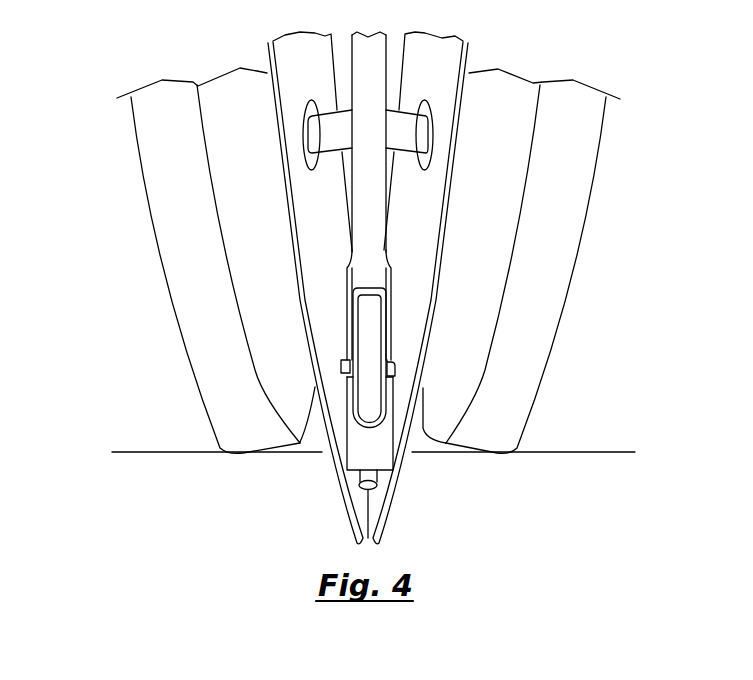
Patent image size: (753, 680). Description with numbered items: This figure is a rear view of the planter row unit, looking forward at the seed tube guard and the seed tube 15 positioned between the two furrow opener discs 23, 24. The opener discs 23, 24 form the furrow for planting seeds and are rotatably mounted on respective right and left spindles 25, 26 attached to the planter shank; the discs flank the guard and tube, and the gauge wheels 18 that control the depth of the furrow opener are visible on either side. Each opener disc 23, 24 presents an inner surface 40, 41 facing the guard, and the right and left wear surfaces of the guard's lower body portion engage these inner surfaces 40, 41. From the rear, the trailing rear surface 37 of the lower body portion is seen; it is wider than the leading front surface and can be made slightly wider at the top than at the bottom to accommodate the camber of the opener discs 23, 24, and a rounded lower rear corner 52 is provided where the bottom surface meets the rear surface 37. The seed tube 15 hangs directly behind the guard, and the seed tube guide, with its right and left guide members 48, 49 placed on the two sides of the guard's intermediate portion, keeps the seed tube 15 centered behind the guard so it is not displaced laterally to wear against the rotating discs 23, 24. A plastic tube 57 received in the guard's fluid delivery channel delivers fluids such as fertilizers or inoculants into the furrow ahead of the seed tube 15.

The seed tube 15 is at (365, 117).
The gauge wheels 18 is at (188, 333).
The opener disc 23 is at (428, 242).
The opener disc 24 is at (305, 216).
The right spindle 25 is at (412, 137).
The left spindle 26 is at (325, 135).
The trailing rear surface 37 is at (378, 450).
The inner surface 40 is at (325, 332).
The inner surface 41 is at (413, 348).
The right guide member 48 is at (391, 288).
The left guide member 49 is at (347, 286).
The rounded lower rear corner 52 is at (550, 22).
The plastic tube 57 is at (363, 485).